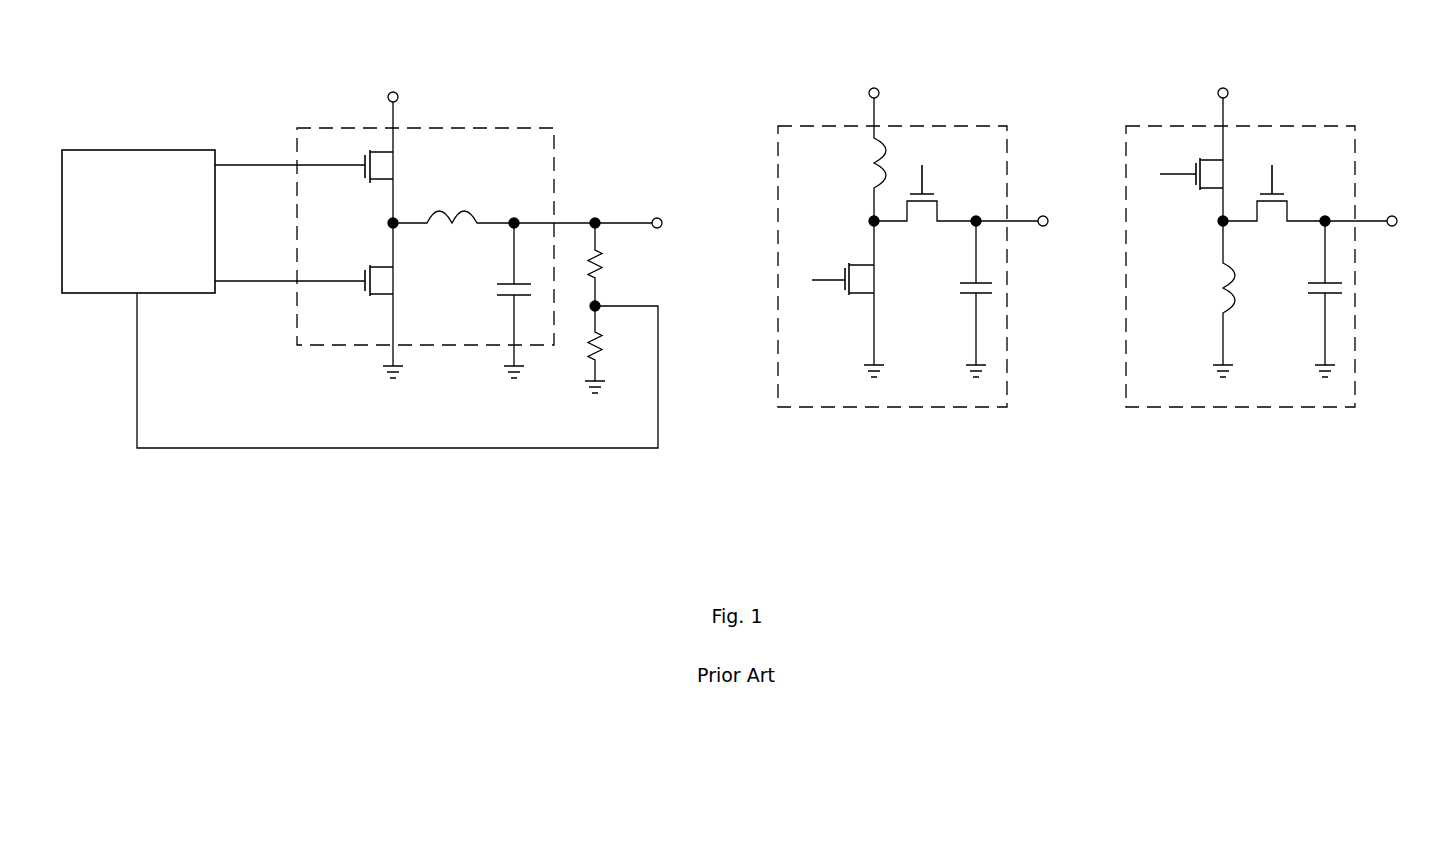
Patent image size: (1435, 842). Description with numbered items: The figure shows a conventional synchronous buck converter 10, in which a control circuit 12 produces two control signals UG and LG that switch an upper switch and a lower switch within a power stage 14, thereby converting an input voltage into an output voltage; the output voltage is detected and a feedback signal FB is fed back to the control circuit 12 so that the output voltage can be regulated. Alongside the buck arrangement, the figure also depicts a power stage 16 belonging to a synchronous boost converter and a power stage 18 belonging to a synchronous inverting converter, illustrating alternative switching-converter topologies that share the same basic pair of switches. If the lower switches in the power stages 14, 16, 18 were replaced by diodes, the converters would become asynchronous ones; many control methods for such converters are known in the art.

The synchronous buck converter 10 is at (552, 80).
The control circuit 12 is at (134, 150).
The power stage 14 is at (460, 126).
The power stage 16 is at (967, 126).
The power stage 18 is at (1315, 126).